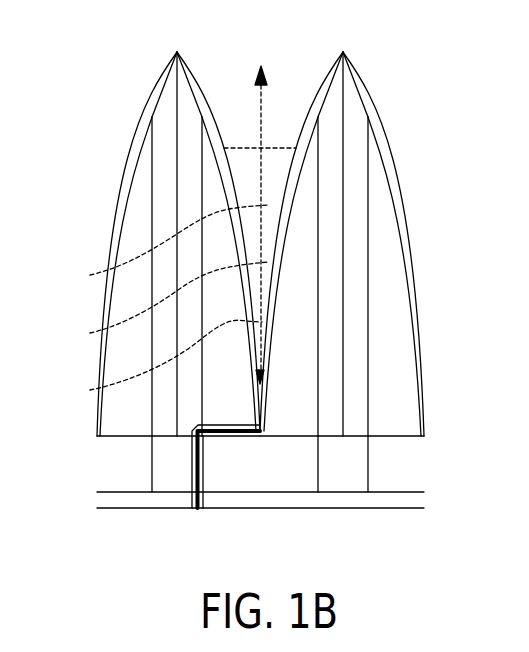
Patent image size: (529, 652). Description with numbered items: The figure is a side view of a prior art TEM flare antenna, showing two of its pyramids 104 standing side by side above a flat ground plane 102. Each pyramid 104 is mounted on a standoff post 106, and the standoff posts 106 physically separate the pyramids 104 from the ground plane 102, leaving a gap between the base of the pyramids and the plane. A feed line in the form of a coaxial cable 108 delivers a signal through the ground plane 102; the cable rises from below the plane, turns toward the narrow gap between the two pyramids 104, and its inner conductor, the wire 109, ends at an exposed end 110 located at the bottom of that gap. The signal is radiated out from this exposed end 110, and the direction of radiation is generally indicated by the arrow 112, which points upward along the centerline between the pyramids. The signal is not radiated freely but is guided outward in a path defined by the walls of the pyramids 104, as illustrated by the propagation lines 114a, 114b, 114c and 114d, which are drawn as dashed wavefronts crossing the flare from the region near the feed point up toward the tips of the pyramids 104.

The ground plane 102 is at (418, 493).
The pyramids 104 is at (400, 222).
The standoff post 106 is at (362, 472).
The coaxial cable 108 is at (192, 443).
The wire 109 is at (196, 510).
The exposed end 110 is at (261, 437).
The arrow 112 is at (263, 123).
The propagation line 114a is at (90, 390).
The propagation line 114b is at (90, 333).
The propagation line 114c is at (90, 275).
The propagation line 114d is at (243, 142).